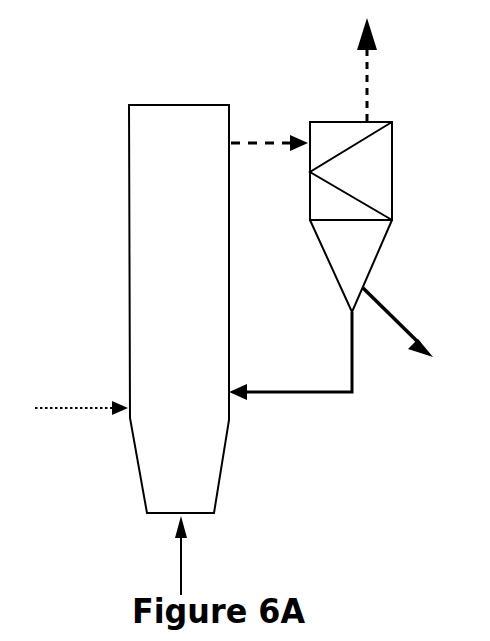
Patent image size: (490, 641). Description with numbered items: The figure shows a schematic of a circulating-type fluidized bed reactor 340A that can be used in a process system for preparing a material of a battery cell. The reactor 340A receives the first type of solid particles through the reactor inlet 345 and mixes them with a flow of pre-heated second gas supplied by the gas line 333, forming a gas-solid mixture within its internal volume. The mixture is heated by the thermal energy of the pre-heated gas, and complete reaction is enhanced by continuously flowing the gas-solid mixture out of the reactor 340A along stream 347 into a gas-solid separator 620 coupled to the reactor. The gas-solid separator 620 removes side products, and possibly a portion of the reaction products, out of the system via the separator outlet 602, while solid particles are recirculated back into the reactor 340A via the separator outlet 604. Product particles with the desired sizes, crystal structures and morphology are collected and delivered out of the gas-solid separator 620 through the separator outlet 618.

The reactor 340A is at (77, 133).
The reactor inlet 345 is at (78, 407).
The gas line 333 is at (183, 542).
The overhead effluent stream to cyclone 347 is at (260, 149).
The gas-solid separator 620 is at (394, 192).
The separator outlet 602 is at (370, 90).
The separator outlet 604 is at (348, 352).
The separator outlet 618 is at (397, 315).